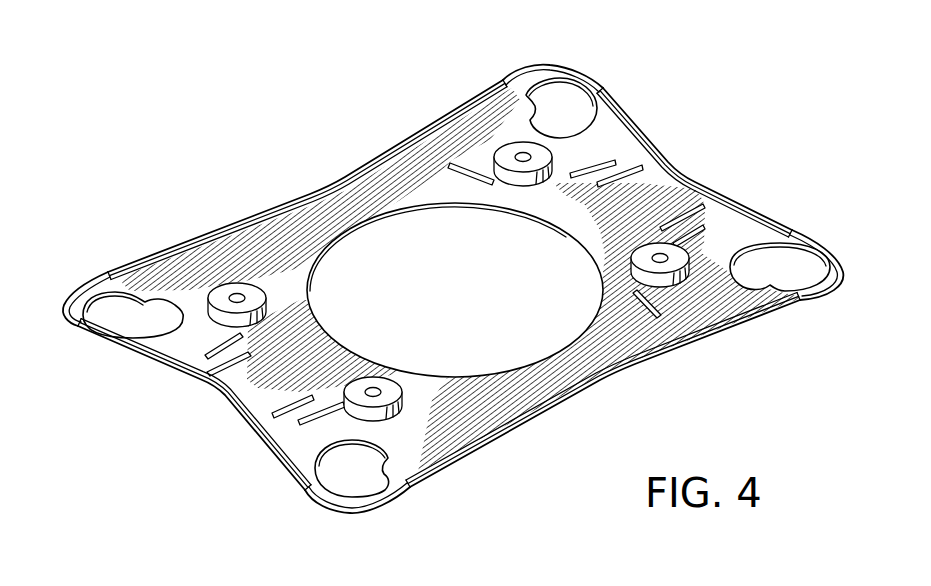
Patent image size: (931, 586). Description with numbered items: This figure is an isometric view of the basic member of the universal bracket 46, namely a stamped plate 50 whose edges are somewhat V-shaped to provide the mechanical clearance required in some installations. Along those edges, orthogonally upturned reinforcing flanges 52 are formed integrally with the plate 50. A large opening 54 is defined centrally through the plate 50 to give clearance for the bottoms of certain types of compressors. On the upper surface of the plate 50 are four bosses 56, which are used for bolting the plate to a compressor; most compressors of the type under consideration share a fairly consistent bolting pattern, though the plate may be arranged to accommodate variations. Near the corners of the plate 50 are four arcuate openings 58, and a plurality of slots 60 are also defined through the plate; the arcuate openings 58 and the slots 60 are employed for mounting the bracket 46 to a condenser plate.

The universal bracket 46 is at (312, 87).
The stamped plate 50 is at (276, 238).
The reinforcing flanges 52 is at (343, 182).
The large opening 54 is at (492, 354).
The bosses 56 is at (523, 152).
The arcuate openings 58 is at (563, 96).
The slots 60 is at (636, 150).